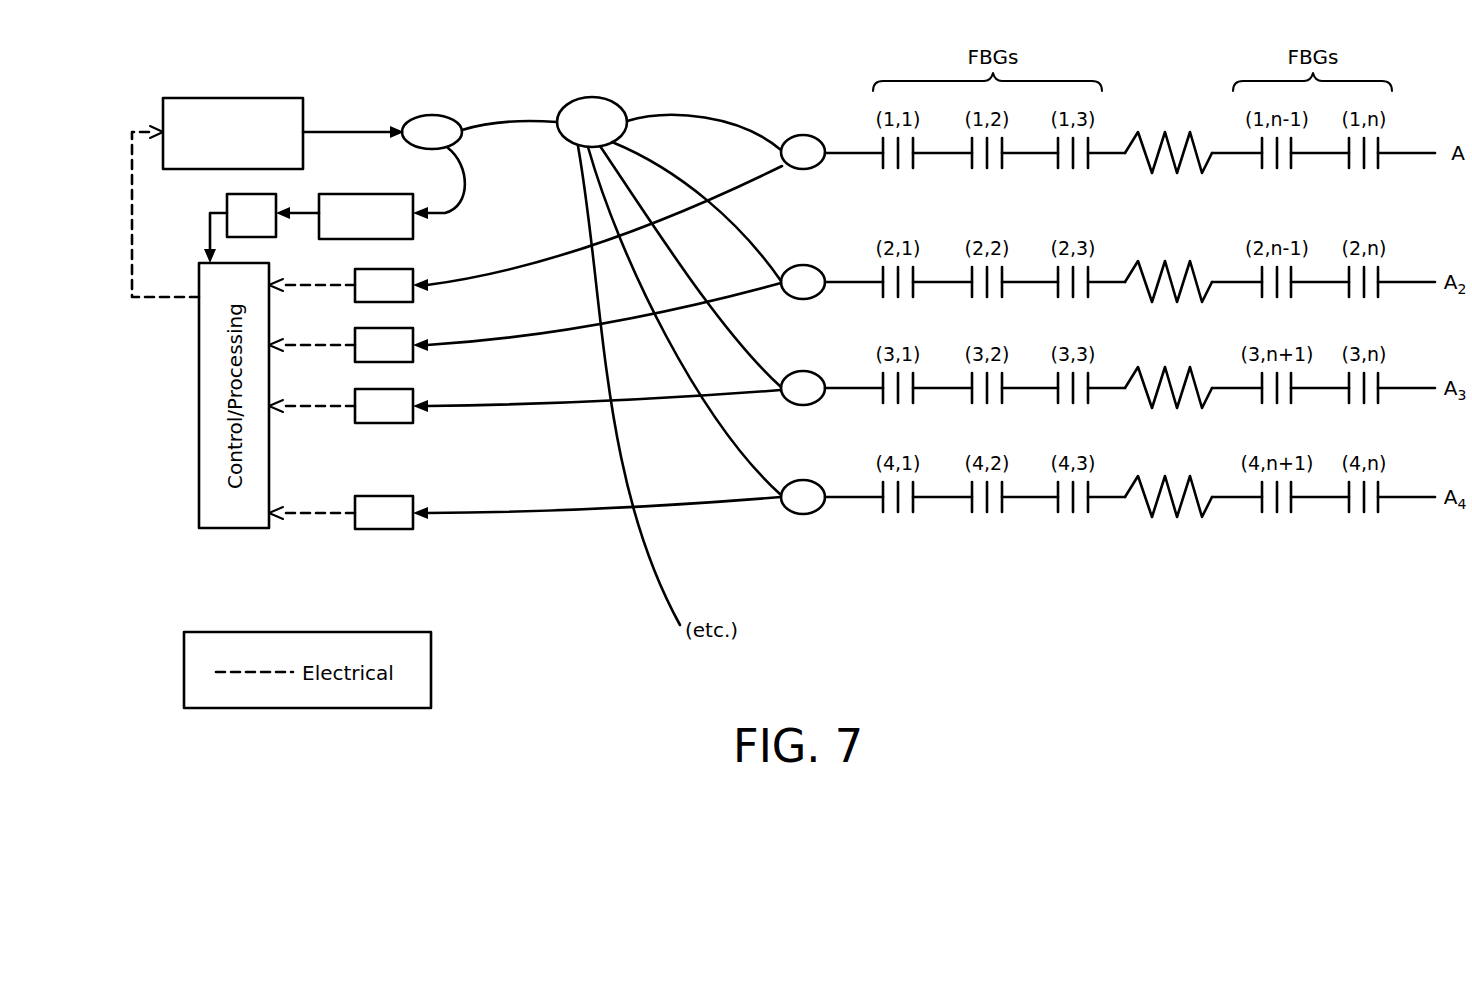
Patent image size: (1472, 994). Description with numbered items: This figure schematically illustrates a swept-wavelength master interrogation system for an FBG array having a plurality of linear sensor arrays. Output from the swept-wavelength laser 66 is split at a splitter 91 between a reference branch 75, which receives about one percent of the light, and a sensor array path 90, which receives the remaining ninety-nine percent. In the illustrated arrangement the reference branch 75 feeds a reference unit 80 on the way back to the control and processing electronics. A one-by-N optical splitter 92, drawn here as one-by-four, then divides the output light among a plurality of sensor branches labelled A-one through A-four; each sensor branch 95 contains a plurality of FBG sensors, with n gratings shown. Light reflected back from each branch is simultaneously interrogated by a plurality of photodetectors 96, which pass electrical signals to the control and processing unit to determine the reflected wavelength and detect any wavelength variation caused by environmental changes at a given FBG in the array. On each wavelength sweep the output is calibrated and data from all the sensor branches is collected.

The swept-wavelength laser 66 is at (275, 112).
The sensor array branch 90 is at (540, 113).
The splitter 91 is at (435, 128).
The reference branch 75 is at (468, 178).
The reference/wavelength monitor 80 is at (350, 206).
The 1×N optical splitter 92 is at (615, 118).
The sensor branch 95 is at (753, 128).
The photodetectors 96 is at (400, 278).